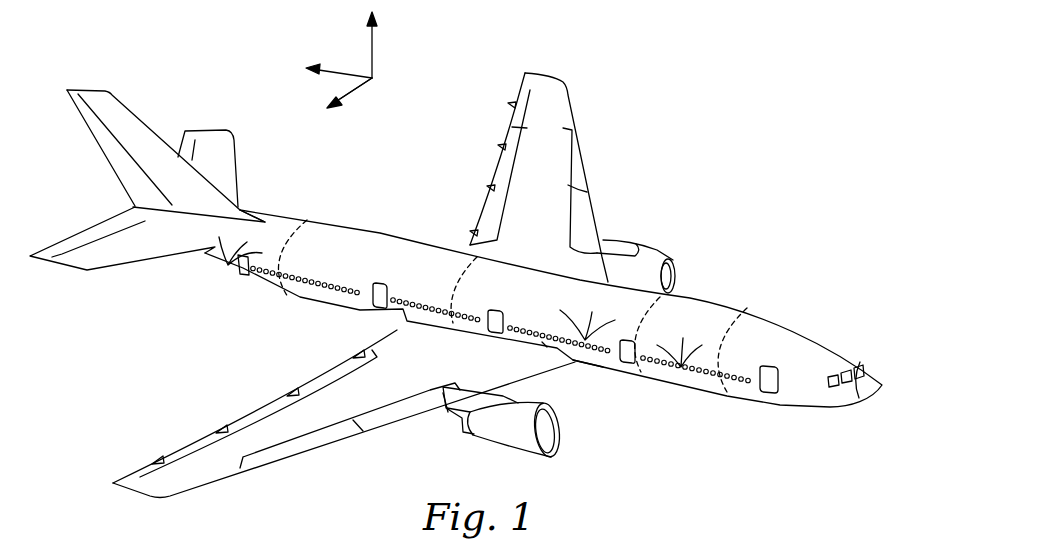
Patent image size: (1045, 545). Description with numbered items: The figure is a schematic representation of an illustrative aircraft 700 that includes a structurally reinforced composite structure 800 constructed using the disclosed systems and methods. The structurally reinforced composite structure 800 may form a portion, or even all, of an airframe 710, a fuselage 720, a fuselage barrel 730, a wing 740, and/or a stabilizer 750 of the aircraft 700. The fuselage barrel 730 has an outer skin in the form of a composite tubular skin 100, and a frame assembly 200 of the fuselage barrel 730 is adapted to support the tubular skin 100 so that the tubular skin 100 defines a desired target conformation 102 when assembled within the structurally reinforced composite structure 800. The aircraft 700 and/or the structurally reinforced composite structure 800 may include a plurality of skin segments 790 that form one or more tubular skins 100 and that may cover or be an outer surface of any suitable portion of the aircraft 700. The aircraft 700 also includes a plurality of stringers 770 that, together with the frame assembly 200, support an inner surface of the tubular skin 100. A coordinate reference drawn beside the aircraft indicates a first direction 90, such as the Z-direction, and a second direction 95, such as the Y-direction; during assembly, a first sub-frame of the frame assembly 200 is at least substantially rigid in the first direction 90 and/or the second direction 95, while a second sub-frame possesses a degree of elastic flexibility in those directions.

The first direction 90 is at (372, 48).
The second direction 95 is at (356, 92).
The composite tubular skin 100 is at (684, 198).
The target conformation 102 is at (779, 440).
The frame assembly 200 is at (228, 265).
The aircraft 700 is at (812, 52).
The airframe 710 is at (780, 263).
The fuselage 720 is at (382, 226).
The fuselage barrel 730 is at (418, 253).
The wing 740 is at (534, 152).
The stabilizer 750 is at (228, 163).
The stringers 770 is at (681, 367).
The skin segments 790 is at (585, 340).
The structurally reinforced composite structure 800 is at (758, 153).